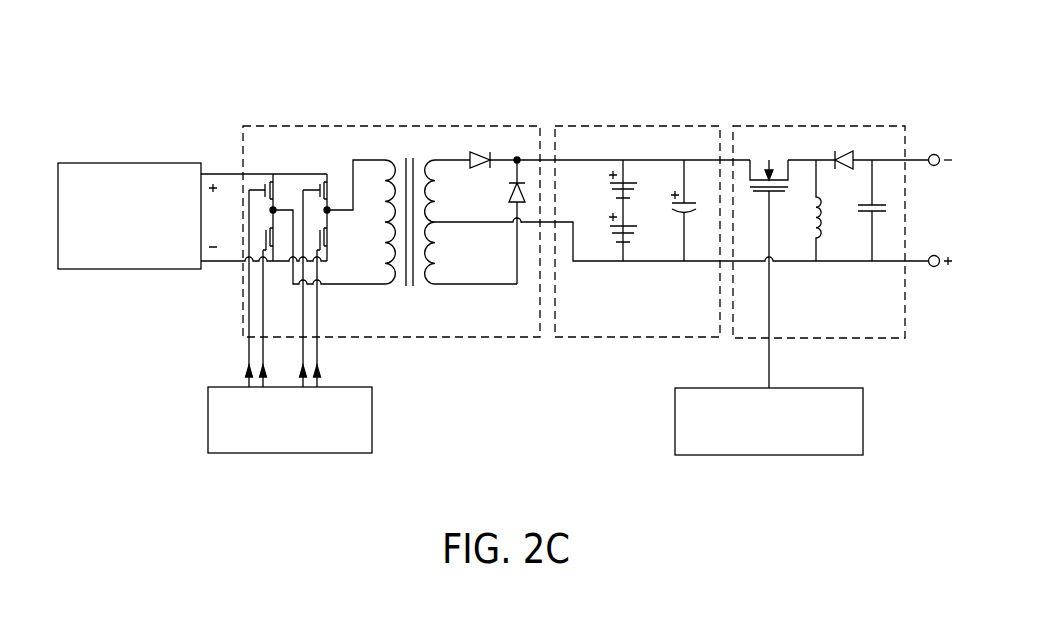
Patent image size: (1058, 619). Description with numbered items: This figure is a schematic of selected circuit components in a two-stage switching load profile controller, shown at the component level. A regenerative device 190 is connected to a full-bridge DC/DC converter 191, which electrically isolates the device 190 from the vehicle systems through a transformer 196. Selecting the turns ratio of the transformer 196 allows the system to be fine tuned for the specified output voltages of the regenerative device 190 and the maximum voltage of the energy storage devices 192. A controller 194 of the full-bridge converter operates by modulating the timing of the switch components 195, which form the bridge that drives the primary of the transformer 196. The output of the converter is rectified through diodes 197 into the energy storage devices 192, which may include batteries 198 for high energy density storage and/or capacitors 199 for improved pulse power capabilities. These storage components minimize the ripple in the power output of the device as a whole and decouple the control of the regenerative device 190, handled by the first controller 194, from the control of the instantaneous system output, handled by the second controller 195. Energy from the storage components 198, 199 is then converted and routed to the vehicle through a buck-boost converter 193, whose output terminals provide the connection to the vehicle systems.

The regenerative device 190 is at (131, 163).
The full-bridge DC/DC converter 191 is at (380, 126).
The energy storage devices 192 is at (636, 126).
The buck-boost converter 193 is at (812, 126).
The controller 194 is at (303, 453).
The switch components 195 is at (287, 173).
The transformer 196 is at (410, 292).
The diodes 197 is at (478, 148).
The batteries 198 is at (623, 264).
The capacitors 199 is at (684, 264).